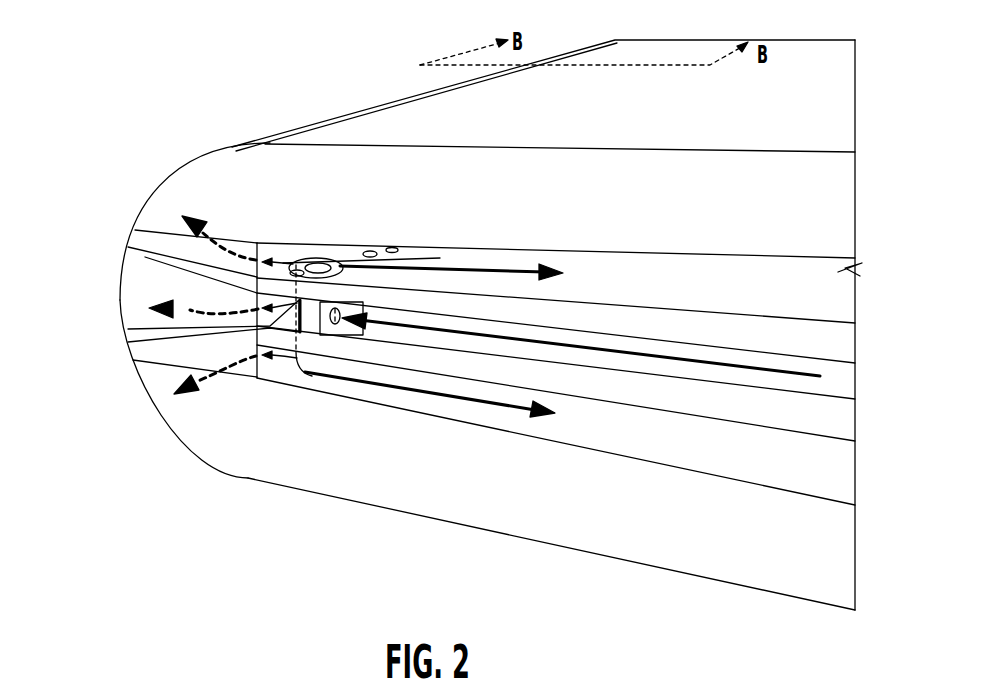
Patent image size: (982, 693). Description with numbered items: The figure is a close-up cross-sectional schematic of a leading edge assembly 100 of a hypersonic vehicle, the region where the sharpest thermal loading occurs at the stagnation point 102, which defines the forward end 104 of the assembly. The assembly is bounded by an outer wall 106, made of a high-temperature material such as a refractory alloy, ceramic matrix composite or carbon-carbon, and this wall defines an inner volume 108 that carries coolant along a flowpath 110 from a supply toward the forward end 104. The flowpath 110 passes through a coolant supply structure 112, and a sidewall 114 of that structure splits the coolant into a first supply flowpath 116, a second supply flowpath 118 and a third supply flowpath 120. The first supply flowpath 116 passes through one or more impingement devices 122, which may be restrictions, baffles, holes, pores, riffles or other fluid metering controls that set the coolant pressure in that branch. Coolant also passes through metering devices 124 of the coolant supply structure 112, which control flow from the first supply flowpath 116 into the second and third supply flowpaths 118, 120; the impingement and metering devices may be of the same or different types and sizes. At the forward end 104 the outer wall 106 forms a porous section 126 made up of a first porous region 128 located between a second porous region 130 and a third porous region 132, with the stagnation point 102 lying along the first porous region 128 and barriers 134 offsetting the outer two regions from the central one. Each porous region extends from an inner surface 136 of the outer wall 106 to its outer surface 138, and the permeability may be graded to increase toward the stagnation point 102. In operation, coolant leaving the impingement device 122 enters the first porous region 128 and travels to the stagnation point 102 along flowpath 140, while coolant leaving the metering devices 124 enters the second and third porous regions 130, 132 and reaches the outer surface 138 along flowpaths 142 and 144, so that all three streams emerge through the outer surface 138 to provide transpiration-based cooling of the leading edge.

The leading edge assembly 100 is at (112, 99).
The stagnation point 102 is at (118, 307).
The forward end 104 is at (132, 232).
The outer wall 106 is at (393, 463).
The inner volume 108 is at (587, 447).
The flowpath 110 is at (700, 362).
The coolant supply structure 112 is at (870, 403).
The sidewall 114 is at (847, 338).
The first supply flowpath 116 is at (820, 373).
The second supply flowpath 118 is at (257, 380).
The third supply flowpath 120 is at (309, 262).
The impingement device 122 is at (331, 340).
The metering device 124 is at (350, 256).
The porous section 126 is at (112, 409).
The first porous region 128 is at (140, 282).
The second porous region 130 is at (180, 398).
The third porous region 132 is at (147, 222).
The barrier 134 is at (150, 245).
The inner surface 136 is at (286, 238).
The outer surface 138 is at (246, 482).
The flowpath 140 is at (177, 319).
The flowpath 142 is at (175, 398).
The flowpath 144 is at (201, 228).